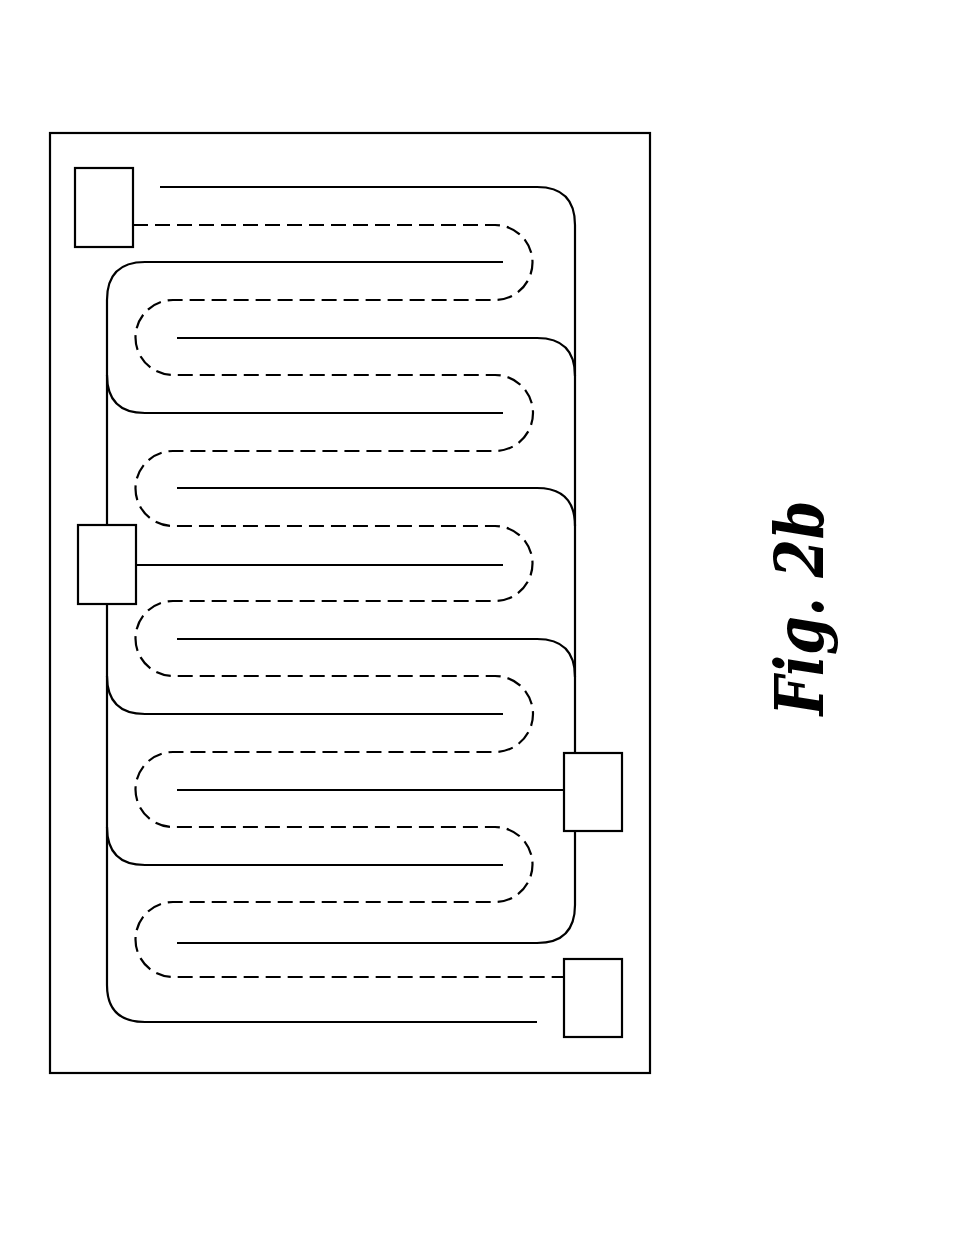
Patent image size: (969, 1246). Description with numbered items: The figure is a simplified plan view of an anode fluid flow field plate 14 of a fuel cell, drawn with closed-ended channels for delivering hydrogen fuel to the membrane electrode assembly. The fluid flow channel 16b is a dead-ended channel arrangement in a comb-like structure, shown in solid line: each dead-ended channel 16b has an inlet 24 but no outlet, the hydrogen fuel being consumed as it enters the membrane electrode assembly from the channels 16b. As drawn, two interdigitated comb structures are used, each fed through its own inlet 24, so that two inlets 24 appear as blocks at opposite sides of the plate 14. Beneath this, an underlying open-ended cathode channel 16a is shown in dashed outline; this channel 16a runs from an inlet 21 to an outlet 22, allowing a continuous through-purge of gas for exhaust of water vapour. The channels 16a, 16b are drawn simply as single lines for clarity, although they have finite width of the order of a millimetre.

The anode fluid flow field plate 14 is at (112, 92).
The open-ended cathode channel 16a is at (300, 223).
The dead-ended channel 16b is at (408, 187).
The inlet 21 is at (75, 212).
The outlet 22 is at (622, 1002).
The inlet 24 is at (78, 570).